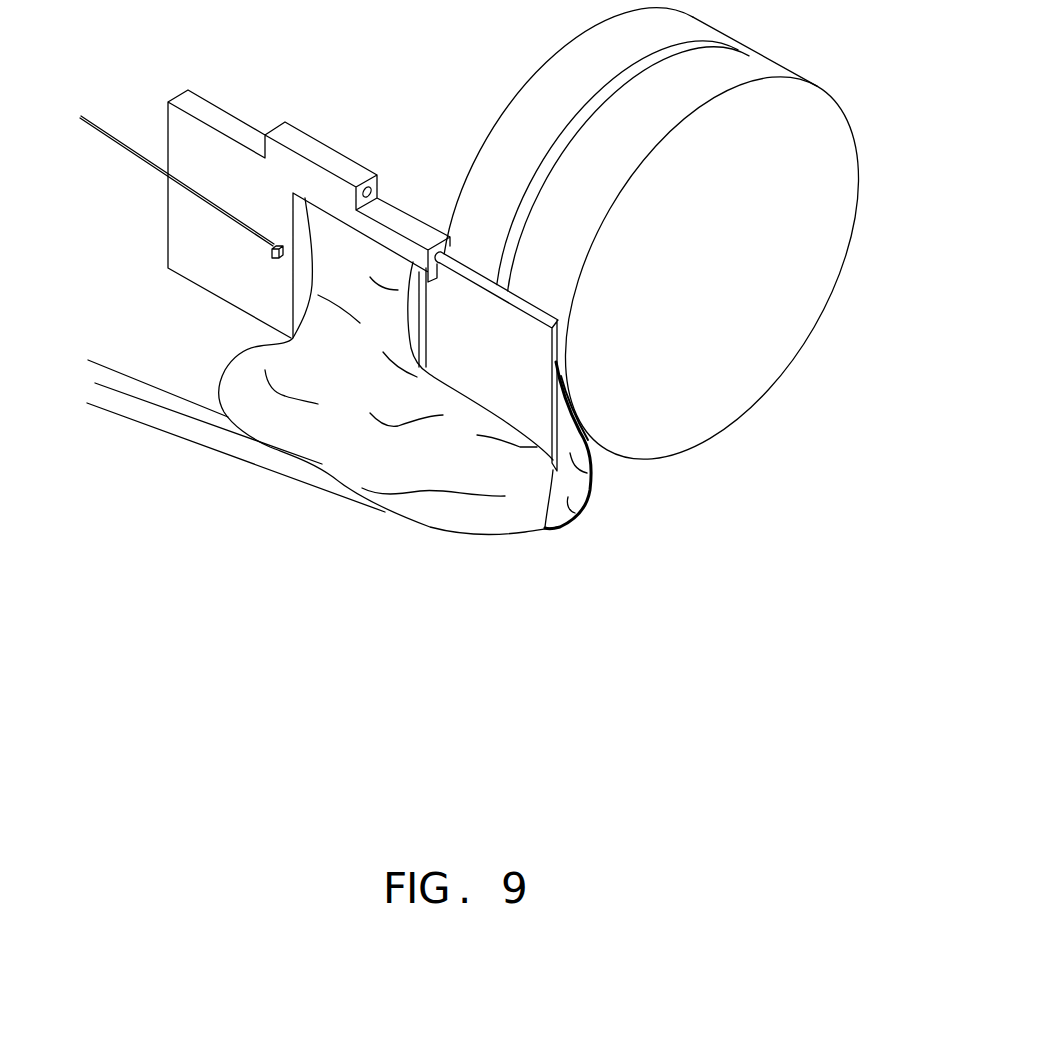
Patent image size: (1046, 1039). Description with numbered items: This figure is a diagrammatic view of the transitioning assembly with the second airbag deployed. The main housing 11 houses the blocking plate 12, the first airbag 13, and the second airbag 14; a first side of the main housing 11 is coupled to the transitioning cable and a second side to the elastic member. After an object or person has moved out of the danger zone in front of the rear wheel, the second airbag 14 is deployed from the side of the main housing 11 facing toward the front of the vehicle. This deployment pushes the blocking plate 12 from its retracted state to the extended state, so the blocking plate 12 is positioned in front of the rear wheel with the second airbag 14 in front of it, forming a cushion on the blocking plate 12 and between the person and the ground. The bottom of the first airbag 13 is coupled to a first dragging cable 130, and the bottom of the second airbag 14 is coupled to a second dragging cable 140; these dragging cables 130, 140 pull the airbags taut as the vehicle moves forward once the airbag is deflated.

The main housing 11 is at (222, 160).
The blocking plate 12 is at (532, 375).
The first airbag 13 is at (588, 488).
The second airbag 14 is at (333, 477).
The first dragging cable 130 is at (214, 436).
The second dragging cable 140 is at (185, 433).